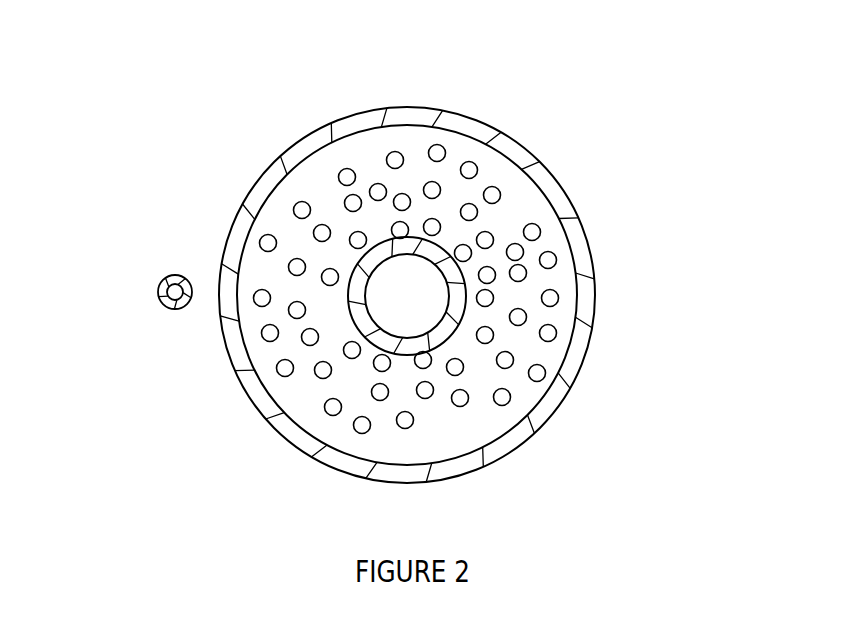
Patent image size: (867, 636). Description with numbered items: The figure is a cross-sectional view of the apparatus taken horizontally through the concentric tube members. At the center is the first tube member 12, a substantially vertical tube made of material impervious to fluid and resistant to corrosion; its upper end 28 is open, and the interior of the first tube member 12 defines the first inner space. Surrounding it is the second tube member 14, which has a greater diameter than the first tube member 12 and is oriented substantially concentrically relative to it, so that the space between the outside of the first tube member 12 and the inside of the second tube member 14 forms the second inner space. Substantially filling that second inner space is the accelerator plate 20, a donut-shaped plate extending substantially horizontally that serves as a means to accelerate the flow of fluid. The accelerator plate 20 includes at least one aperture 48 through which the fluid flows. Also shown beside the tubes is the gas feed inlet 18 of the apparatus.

The first tube member 12 is at (462, 317).
The second tube member 14 is at (588, 350).
The gas feed inlet 18 is at (160, 300).
The accelerator plate 20 is at (370, 160).
The upper end 28 is at (408, 295).
The aperture 48 is at (413, 423).